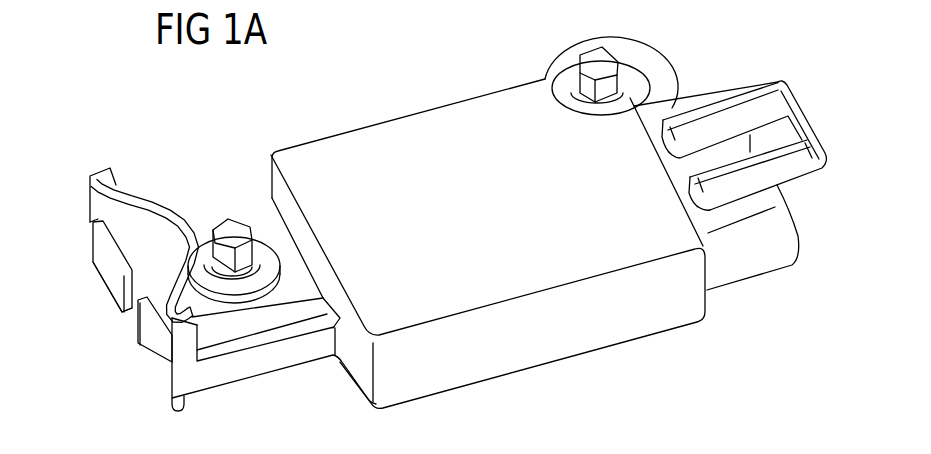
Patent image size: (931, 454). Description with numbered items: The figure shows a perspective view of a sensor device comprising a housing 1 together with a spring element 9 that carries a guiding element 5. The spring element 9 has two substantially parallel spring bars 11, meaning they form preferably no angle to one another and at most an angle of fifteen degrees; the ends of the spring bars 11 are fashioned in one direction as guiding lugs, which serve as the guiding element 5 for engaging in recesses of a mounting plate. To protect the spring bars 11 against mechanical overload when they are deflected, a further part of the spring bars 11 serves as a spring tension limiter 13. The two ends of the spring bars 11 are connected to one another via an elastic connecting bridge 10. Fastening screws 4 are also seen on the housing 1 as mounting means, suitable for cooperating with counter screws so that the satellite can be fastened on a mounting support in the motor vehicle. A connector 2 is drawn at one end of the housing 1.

The housing 1 is at (551, 343).
The plug connector 2 is at (768, 256).
The fastening screws 4 is at (603, 57).
The guiding element 5 is at (95, 268).
The spring element 9 is at (97, 212).
The elastic connecting bridge 10 is at (133, 210).
The spring bars 11 is at (187, 202).
The spring tension limiter 13 is at (147, 337).